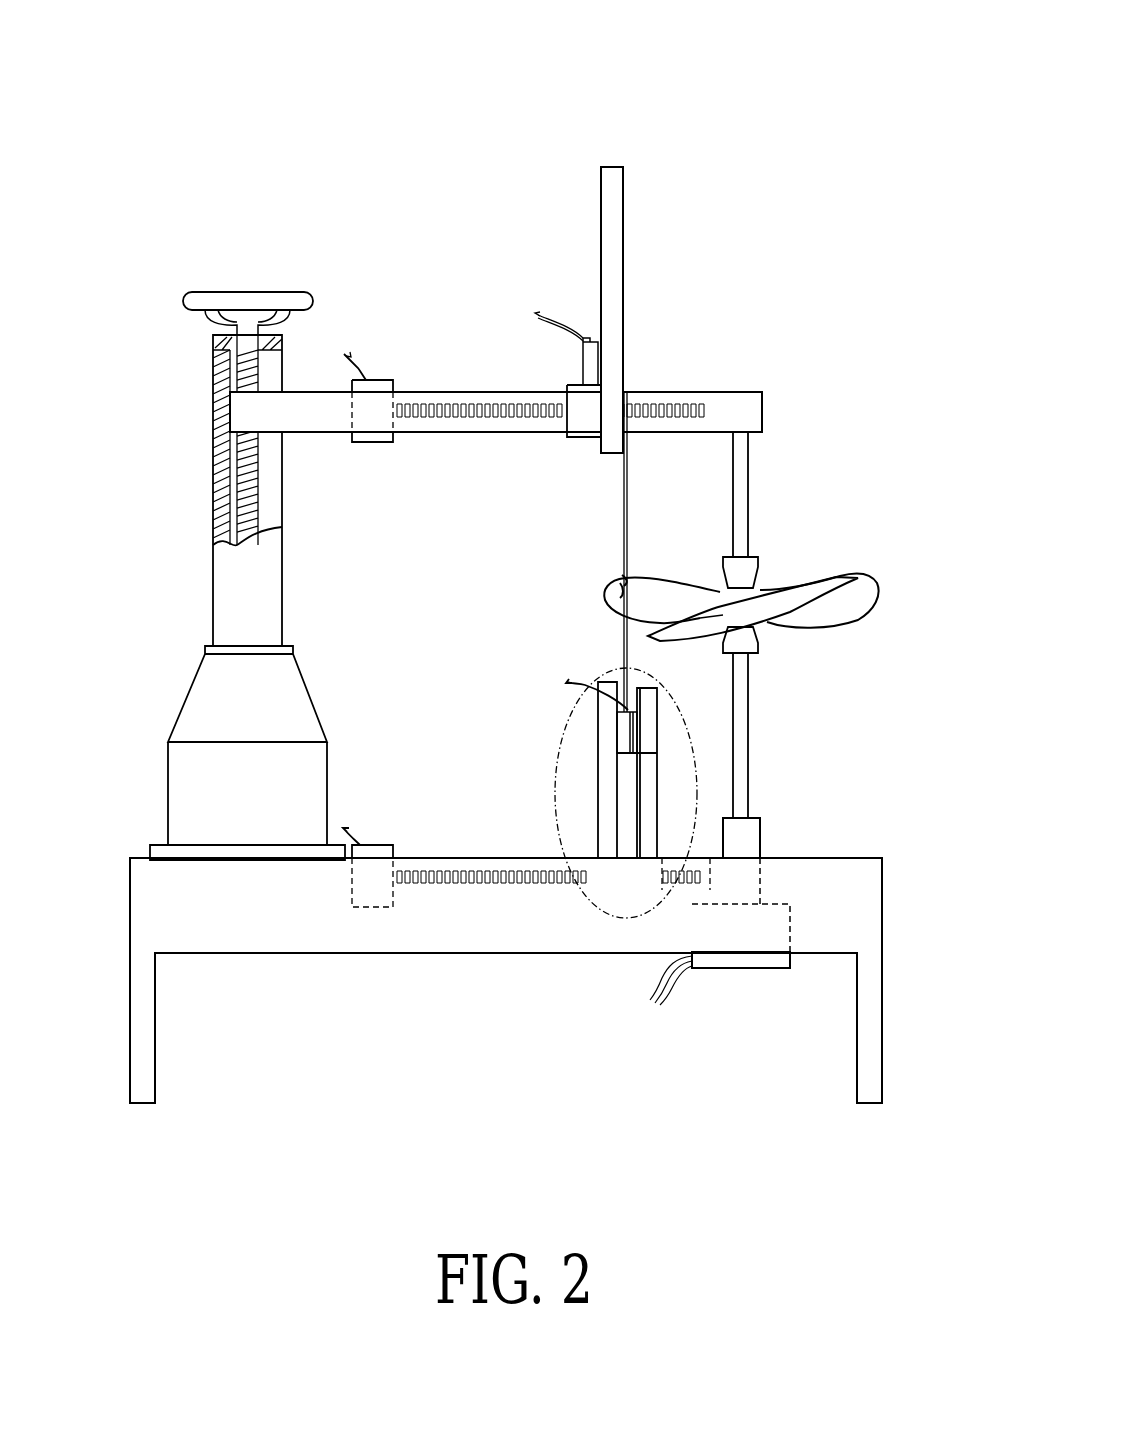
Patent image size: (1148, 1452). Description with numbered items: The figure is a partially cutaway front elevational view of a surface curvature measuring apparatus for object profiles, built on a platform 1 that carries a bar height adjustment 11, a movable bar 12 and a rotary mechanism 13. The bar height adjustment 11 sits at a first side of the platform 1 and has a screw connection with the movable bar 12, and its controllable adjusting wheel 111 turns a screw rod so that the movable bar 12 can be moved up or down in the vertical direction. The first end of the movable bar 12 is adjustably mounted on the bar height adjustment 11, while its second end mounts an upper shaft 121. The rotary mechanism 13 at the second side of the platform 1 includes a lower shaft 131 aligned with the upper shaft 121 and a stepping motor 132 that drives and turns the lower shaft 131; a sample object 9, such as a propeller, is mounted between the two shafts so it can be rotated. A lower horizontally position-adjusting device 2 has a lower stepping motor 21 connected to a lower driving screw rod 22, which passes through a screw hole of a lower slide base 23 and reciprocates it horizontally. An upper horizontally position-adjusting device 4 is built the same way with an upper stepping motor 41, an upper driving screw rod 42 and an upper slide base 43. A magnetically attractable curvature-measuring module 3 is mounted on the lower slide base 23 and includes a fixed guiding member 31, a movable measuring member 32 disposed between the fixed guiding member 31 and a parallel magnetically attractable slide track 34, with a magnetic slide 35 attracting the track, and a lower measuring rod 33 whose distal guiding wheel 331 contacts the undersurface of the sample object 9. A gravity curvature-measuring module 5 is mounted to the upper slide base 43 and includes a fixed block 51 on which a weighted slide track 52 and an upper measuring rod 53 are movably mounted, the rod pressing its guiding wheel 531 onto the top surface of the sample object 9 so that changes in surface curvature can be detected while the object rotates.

The platform 1 is at (140, 872).
The bar height adjustment 11 is at (215, 580).
The controllable adjusting wheel 111 is at (200, 292).
The movable bar 12 is at (755, 392).
The upper shaft 121 is at (752, 487).
The rotary mechanism 13 is at (750, 840).
The lower shaft 131 is at (748, 768).
The stepping motor 132 is at (730, 968).
The lower horizontally position-adjusting device 2 is at (450, 1100).
The lower stepping motor 21 is at (372, 900).
The lower driving screw rod 22 is at (455, 887).
The lower slide base 23 is at (597, 900).
The magnetically attractable curvature-measuring module 3 is at (440, 572).
The fixed guiding member 31 is at (602, 703).
The movable measuring member 32 is at (628, 732).
The lower measuring rod 33 is at (612, 655).
The guiding wheel 331 is at (612, 580).
The magnetically attractable slide track 34 is at (647, 783).
The magnetic slide 35 is at (630, 757).
The upper horizontally position-adjusting device 4 is at (445, 178).
The upper stepping motor 41 is at (377, 380).
The upper driving screw rod 42 is at (455, 400).
The upper slide base 43 is at (567, 387).
The gravity curvature-measuring module 5 is at (745, 90).
The fixed block 51 is at (593, 343).
The slide track 52 is at (612, 167).
The upper measuring rod 53 is at (630, 470).
The guiding wheel 531 is at (620, 577).
The sample object 9 is at (857, 617).